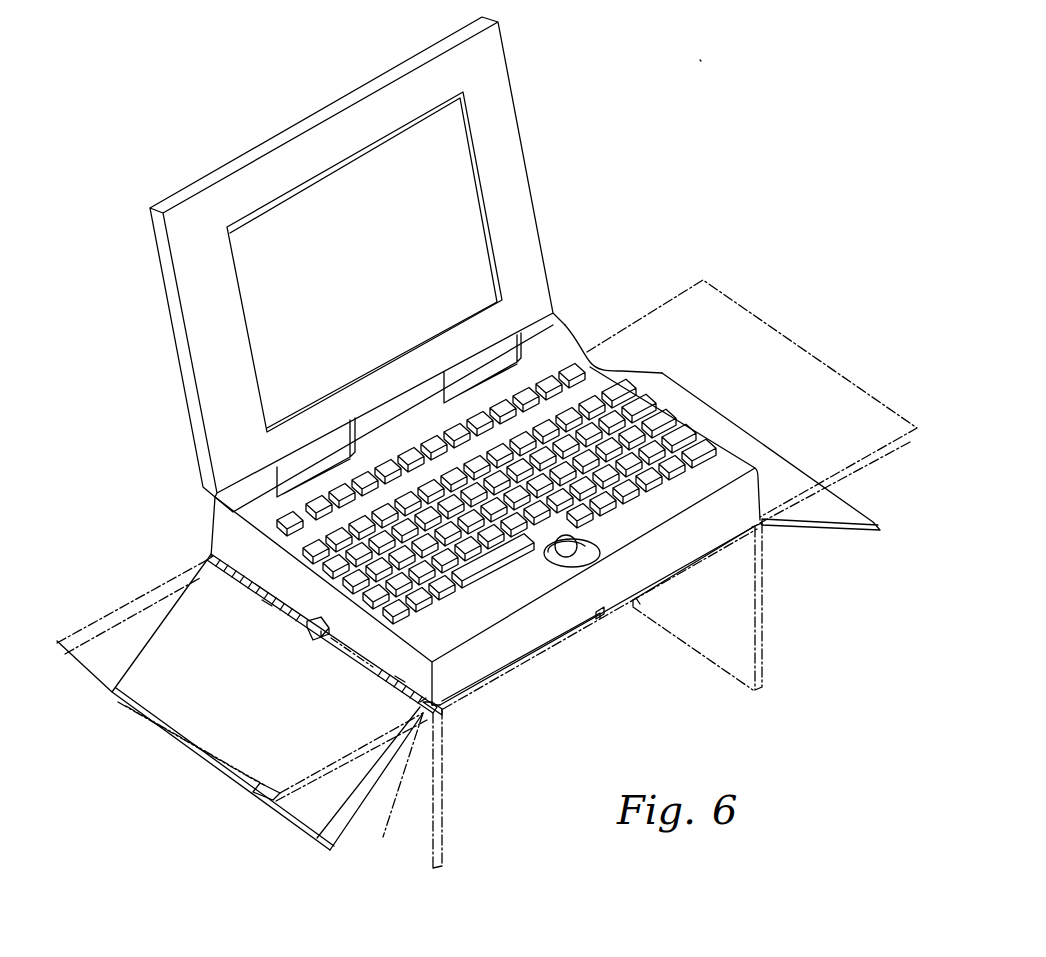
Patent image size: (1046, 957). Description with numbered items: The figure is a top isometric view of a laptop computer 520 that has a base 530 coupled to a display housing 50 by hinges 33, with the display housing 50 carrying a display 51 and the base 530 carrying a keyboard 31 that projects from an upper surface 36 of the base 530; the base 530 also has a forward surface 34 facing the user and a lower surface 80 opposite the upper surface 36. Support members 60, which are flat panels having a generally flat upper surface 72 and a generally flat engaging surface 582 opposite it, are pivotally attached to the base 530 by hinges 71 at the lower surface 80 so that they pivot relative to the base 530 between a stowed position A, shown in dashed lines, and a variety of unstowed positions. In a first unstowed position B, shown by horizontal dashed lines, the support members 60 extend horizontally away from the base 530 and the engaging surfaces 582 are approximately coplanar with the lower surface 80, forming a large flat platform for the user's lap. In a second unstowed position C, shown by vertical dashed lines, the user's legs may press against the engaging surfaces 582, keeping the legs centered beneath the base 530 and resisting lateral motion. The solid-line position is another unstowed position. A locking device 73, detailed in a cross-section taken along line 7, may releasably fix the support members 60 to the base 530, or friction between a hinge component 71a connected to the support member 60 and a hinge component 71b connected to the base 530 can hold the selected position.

The laptop computer 520 is at (708, 147).
The display housing 50 is at (528, 103).
The display 51 is at (272, 240).
The base 530 is at (573, 322).
The hinges 33 is at (472, 380).
The upper surface 36 is at (590, 358).
The keyboard 31 is at (605, 398).
The forward surface 34 is at (517, 640).
The hinges 71 is at (248, 592).
The hinge component 71a is at (272, 605).
The hinge component 71b is at (240, 557).
The locking device 73 is at (306, 640).
The section line 7- 7 is at (312, 599).
The lower surface 80 is at (642, 593).
The support members 60 is at (287, 823).
The upper surface 72 is at (325, 810).
The engaging surface 582 is at (357, 817).
The stowed position A is at (563, 647).
The first unstowed position B is at (262, 790).
The second unstowed position C is at (446, 772).